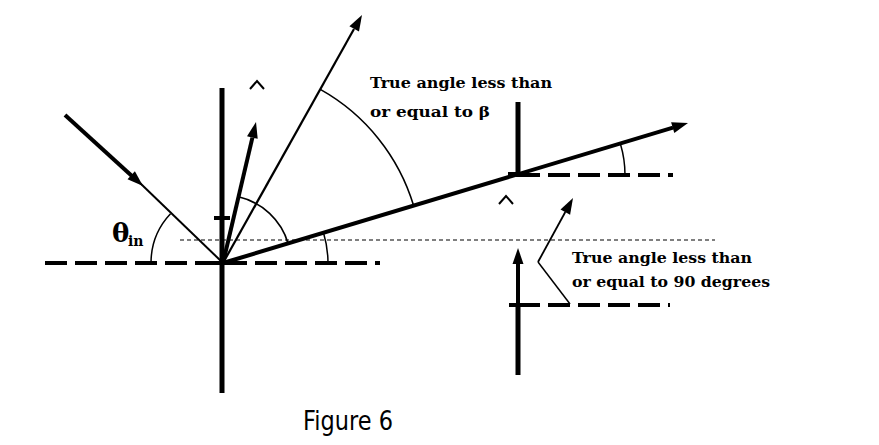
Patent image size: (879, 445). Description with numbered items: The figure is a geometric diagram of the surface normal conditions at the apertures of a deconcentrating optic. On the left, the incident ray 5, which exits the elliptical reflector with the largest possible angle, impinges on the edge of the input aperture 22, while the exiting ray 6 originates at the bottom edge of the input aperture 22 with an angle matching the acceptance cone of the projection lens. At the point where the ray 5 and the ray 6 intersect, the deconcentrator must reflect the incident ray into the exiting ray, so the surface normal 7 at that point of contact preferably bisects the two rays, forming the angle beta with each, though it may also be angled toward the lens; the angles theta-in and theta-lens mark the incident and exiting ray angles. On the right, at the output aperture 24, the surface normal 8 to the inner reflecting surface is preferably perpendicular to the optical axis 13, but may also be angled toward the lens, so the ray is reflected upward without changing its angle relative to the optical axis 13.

The ray 5 is at (90, 137).
The ray 6 is at (597, 150).
The surface normal 7 is at (322, 80).
The surface normal 8 is at (538, 263).
The optical axis 13 is at (655, 240).
The input aperture 22 is at (216, 229).
The output aperture 24 is at (517, 190).